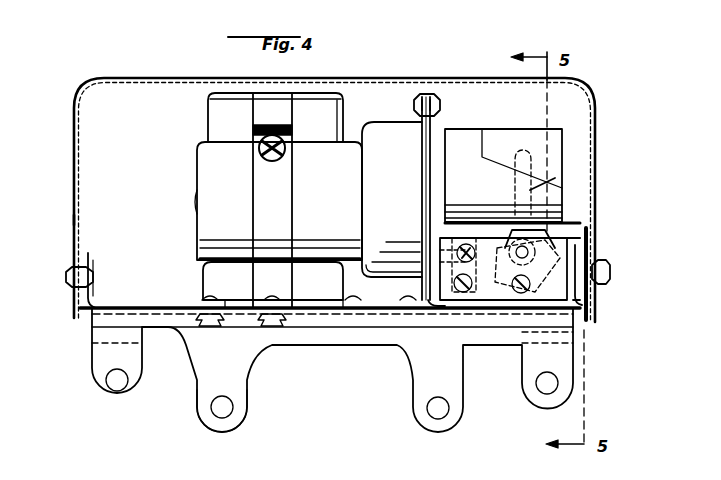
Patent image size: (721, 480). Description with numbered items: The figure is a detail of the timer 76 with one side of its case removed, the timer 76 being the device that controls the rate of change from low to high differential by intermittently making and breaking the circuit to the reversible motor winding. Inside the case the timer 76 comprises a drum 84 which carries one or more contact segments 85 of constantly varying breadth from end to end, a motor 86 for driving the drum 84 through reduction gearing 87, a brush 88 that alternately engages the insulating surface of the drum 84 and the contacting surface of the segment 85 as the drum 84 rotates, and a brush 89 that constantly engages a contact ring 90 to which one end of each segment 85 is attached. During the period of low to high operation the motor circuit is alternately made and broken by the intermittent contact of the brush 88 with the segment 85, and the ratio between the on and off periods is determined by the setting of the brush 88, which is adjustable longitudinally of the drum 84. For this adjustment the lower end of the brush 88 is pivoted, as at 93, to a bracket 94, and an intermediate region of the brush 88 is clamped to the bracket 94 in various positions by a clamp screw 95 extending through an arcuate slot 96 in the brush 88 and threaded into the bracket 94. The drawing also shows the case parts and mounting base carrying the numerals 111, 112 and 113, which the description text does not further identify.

The timer 76 is at (77, 96).
The cover side wall 113 is at (75, 218).
The base plate 111 is at (330, 322).
The mounting lobe 112 is at (240, 412).
The motor 86 is at (197, 236).
The reduction gearing 87 is at (396, 122).
The brush 88 is at (545, 205).
The contact ring 90 is at (458, 130).
The drum 84 is at (507, 130).
The contact segment 85 is at (533, 186).
The brush 89 is at (455, 234).
The clamp screw 95 is at (555, 230).
The bracket 94 is at (565, 242).
The arcuate slot 96 is at (572, 257).
The pivot 93 is at (578, 305).